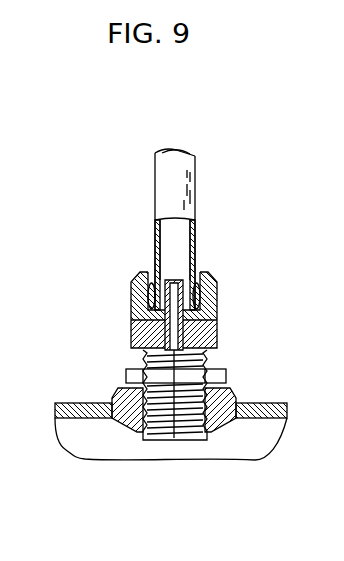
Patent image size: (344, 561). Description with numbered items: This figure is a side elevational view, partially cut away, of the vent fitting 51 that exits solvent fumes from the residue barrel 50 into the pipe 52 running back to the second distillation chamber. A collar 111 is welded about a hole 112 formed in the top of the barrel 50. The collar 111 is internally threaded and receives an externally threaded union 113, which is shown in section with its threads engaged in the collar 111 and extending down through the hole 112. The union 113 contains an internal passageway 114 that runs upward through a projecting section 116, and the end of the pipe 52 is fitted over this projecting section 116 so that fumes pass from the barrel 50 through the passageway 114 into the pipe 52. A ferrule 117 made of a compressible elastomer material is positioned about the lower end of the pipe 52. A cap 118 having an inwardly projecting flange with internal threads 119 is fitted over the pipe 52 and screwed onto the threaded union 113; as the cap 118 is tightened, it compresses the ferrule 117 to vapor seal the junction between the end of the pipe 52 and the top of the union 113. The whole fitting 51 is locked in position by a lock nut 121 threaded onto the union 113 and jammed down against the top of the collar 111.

The pipe 52 is at (160, 164).
The vent fitting 51 is at (100, 311).
The projecting section 116 is at (178, 282).
The cap 118 is at (218, 278).
The ferrule 117 is at (205, 302).
The internal passageway 114 is at (205, 335).
The internal threads 119 is at (148, 340).
The barrel 50 is at (72, 402).
The lock nut 121 is at (226, 374).
The hole 112 is at (112, 418).
The union 113 is at (165, 430).
The collar 111 is at (232, 430).